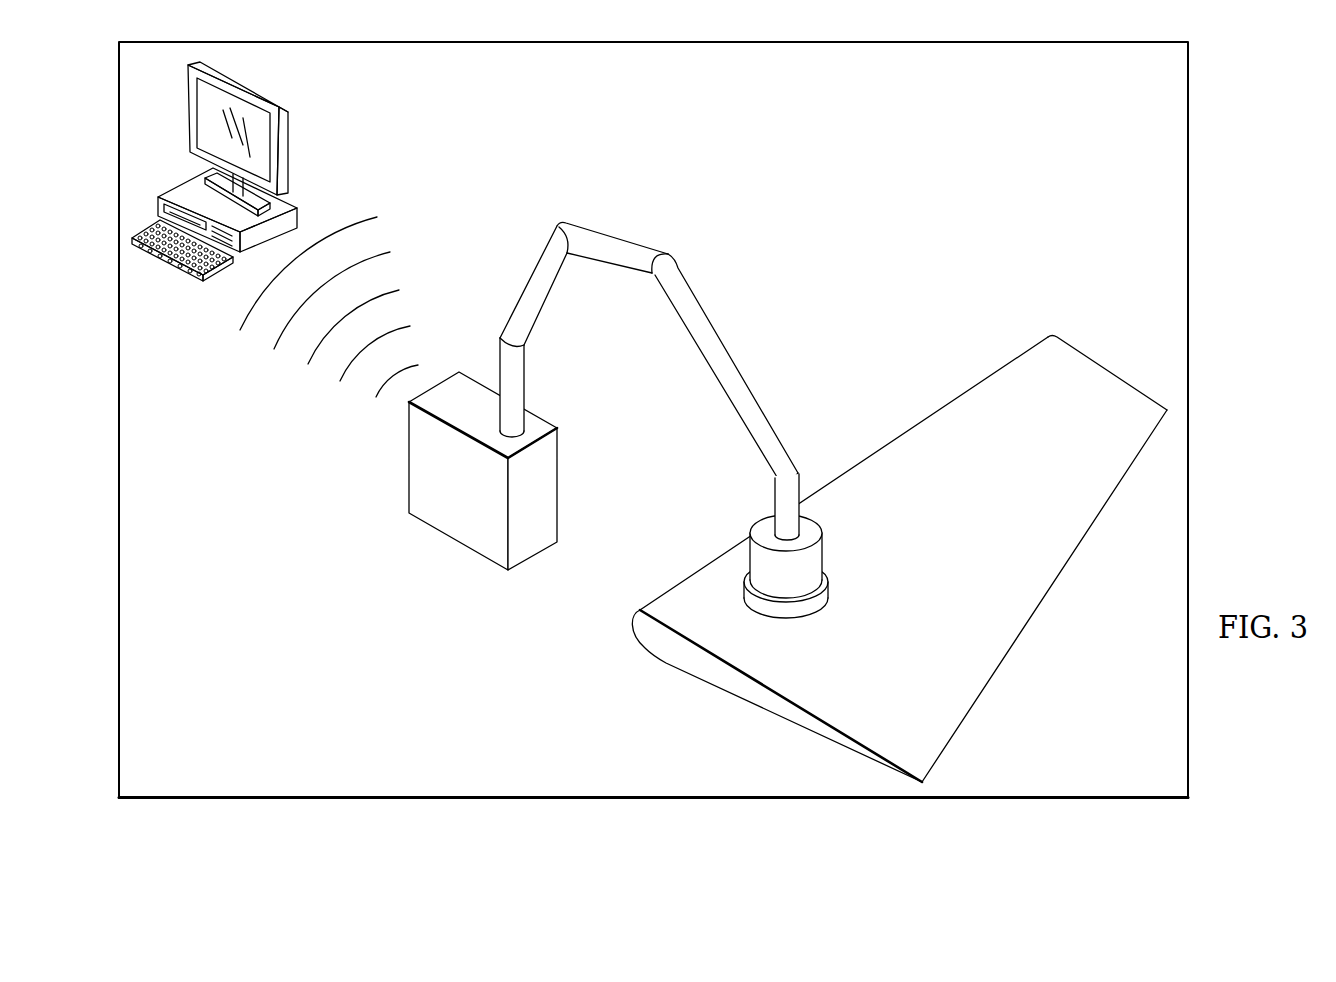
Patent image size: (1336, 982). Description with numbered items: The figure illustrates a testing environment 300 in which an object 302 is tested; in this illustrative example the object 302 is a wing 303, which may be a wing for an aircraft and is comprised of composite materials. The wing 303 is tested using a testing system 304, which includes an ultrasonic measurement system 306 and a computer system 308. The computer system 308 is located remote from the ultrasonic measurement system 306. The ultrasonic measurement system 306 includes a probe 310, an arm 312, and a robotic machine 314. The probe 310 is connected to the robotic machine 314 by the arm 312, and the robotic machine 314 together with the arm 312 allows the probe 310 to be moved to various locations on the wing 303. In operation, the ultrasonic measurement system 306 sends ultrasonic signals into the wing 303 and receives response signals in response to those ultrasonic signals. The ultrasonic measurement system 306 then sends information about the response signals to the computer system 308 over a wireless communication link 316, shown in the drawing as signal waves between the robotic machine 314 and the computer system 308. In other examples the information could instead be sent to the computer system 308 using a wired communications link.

The testing environment 300 is at (1198, 173).
The object 302 is at (993, 388).
The wing 303 is at (1050, 572).
The testing system 304 is at (842, 421).
The ultrasonic measurement system 306 is at (748, 506).
The computer system 308 is at (290, 150).
The probe 310 is at (815, 557).
The arm 312 is at (725, 366).
The robotic machine 314 is at (455, 528).
The wireless communication link 316 is at (412, 226).